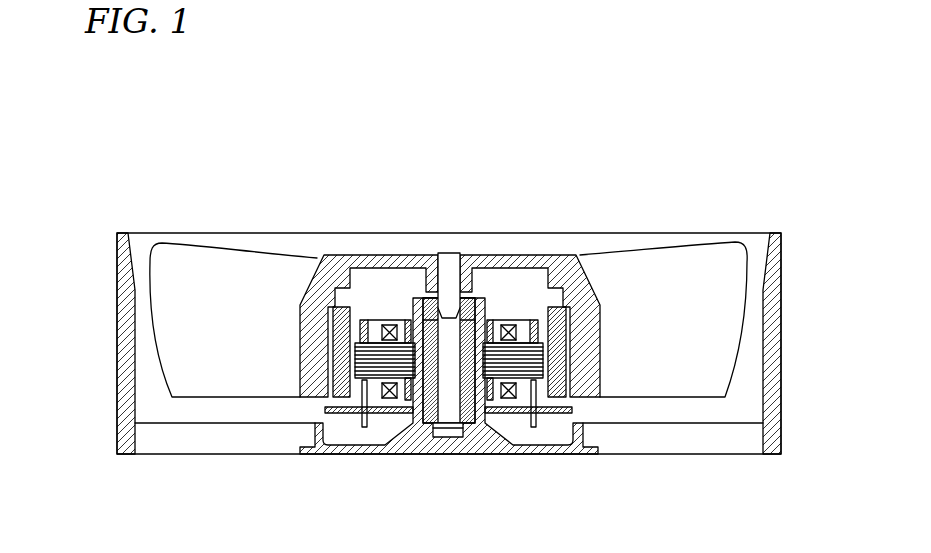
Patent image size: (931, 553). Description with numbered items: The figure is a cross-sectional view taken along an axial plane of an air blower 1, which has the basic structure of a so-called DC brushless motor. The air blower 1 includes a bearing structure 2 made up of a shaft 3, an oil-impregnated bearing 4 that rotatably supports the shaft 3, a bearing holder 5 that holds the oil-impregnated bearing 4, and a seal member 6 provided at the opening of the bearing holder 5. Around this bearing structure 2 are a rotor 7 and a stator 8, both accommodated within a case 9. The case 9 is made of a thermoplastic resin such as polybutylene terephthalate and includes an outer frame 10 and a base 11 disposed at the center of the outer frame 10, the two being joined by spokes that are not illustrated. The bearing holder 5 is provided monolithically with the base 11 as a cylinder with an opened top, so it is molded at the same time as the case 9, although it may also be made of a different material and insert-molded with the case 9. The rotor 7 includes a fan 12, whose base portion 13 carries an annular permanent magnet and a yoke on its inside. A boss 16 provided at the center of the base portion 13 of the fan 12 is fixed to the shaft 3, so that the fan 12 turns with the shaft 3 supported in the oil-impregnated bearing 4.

The air blower 1 is at (704, 144).
The bearing structure 2 is at (488, 283).
The shaft 3 is at (448, 268).
The oil-impregnated bearing 4 is at (413, 426).
The bearing holder 5 is at (405, 305).
The seal member 6 is at (480, 300).
The rotor 7 is at (339, 245).
The stator 8 is at (386, 320).
The case 9 is at (781, 234).
The outer frame 10 is at (773, 327).
The base 11 is at (485, 450).
The fan 12 is at (275, 253).
The base portion 13 is at (312, 375).
The boss 16 is at (473, 278).